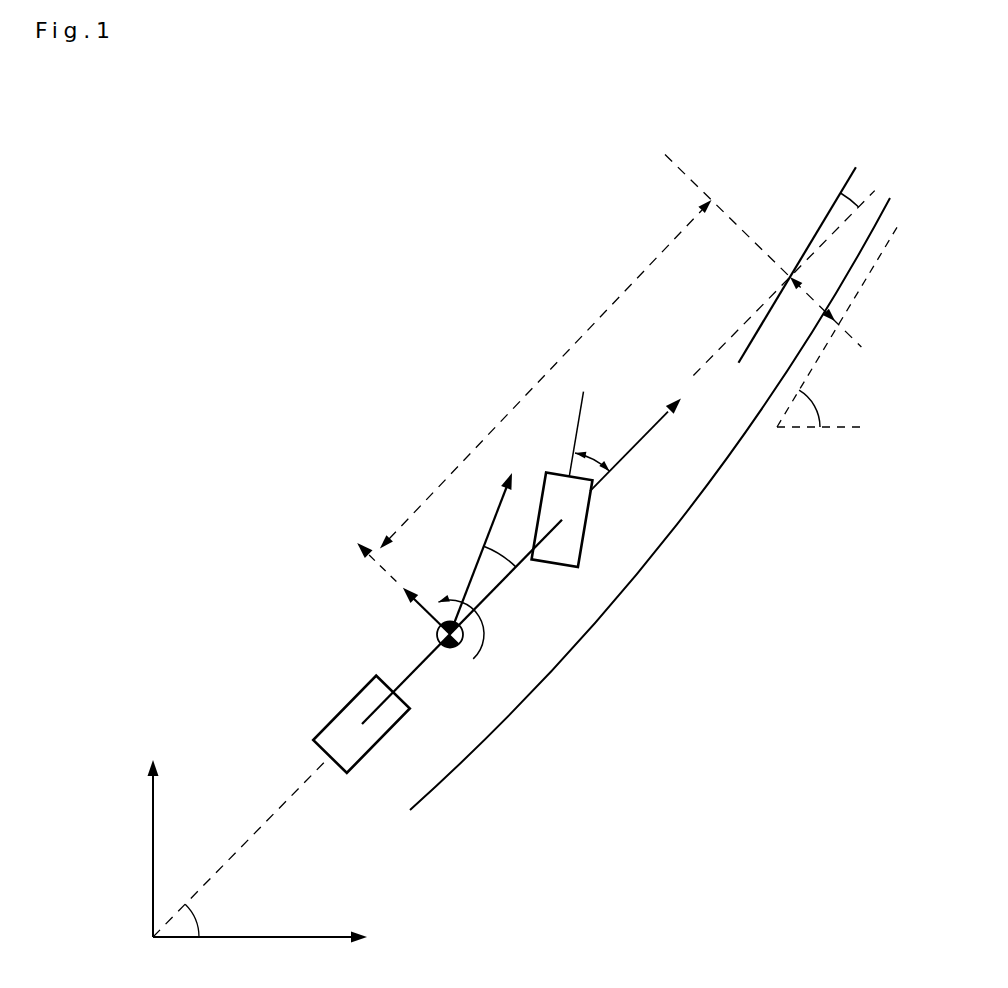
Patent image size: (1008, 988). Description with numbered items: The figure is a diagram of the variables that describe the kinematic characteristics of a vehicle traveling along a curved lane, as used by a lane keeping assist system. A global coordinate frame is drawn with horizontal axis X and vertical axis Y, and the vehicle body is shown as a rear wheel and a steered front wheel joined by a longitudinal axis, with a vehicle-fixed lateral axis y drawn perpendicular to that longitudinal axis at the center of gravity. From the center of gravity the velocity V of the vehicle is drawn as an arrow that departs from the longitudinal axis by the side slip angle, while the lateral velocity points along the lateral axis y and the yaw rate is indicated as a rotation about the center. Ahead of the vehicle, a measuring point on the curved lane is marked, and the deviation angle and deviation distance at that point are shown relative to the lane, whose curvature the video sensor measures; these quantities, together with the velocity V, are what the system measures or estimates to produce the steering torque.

The global X axis X is at (260, 957).
The global Y axis Y is at (137, 848).
The velocity of the vehicle V is at (481, 541).
The vehicle lateral axis y is at (360, 562).